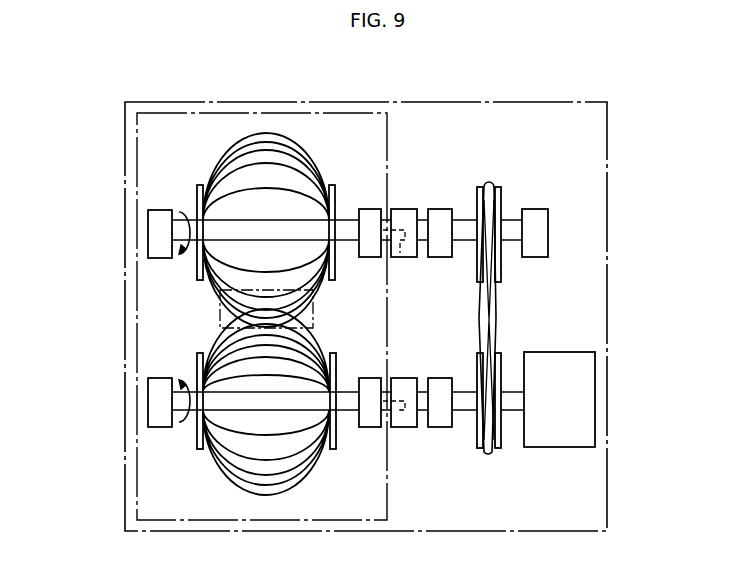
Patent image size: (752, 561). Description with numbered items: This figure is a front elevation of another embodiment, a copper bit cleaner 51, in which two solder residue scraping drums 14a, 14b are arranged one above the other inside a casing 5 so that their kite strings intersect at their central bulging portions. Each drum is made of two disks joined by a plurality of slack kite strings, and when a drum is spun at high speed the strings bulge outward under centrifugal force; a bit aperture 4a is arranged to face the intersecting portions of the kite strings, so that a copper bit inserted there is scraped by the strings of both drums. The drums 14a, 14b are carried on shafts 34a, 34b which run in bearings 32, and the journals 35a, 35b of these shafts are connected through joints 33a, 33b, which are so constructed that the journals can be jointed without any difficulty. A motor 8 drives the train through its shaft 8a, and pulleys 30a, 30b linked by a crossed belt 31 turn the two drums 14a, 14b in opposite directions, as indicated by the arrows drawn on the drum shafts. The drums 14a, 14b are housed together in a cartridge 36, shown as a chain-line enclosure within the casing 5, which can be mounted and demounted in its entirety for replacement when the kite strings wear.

The casing 5 is at (608, 238).
The copper bit cleaner 51 is at (112, 143).
The cartridge 36 is at (228, 125).
The drum 14b is at (203, 150).
The drum 14a is at (203, 352).
The bit aperture 4a is at (220, 312).
The shaft 34b is at (349, 243).
The shaft 34a is at (350, 391).
The shaft 8a is at (512, 390).
The bearing 32 is at (158, 209).
The joint 33b is at (402, 208).
The joint 33a is at (406, 378).
The journal 35b is at (400, 255).
The journal 35a is at (402, 414).
The pulley 30b is at (480, 192).
The pulley 30a is at (478, 385).
The crossed belt 31 is at (493, 183).
The motor 8 is at (588, 414).